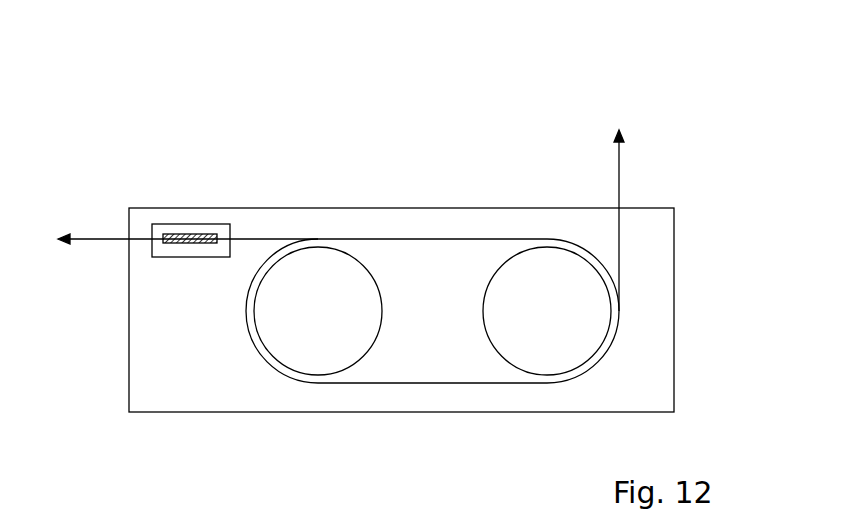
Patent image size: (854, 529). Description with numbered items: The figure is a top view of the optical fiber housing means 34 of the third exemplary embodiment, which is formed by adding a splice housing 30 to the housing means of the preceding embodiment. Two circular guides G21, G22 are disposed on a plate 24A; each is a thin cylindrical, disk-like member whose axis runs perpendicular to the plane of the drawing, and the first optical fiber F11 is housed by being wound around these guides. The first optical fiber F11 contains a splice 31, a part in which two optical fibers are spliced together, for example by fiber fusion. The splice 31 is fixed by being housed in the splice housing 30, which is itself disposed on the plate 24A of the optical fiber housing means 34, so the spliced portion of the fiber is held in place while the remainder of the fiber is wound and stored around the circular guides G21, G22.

The optical fiber housing means 34 is at (412, 118).
The plate 24A is at (347, 215).
The first optical fiber F11 is at (341, 256).
The circular guide G22 is at (317, 365).
The circular guide G21 is at (548, 365).
The splice housing 30 is at (199, 201).
The splice 31 is at (184, 235).